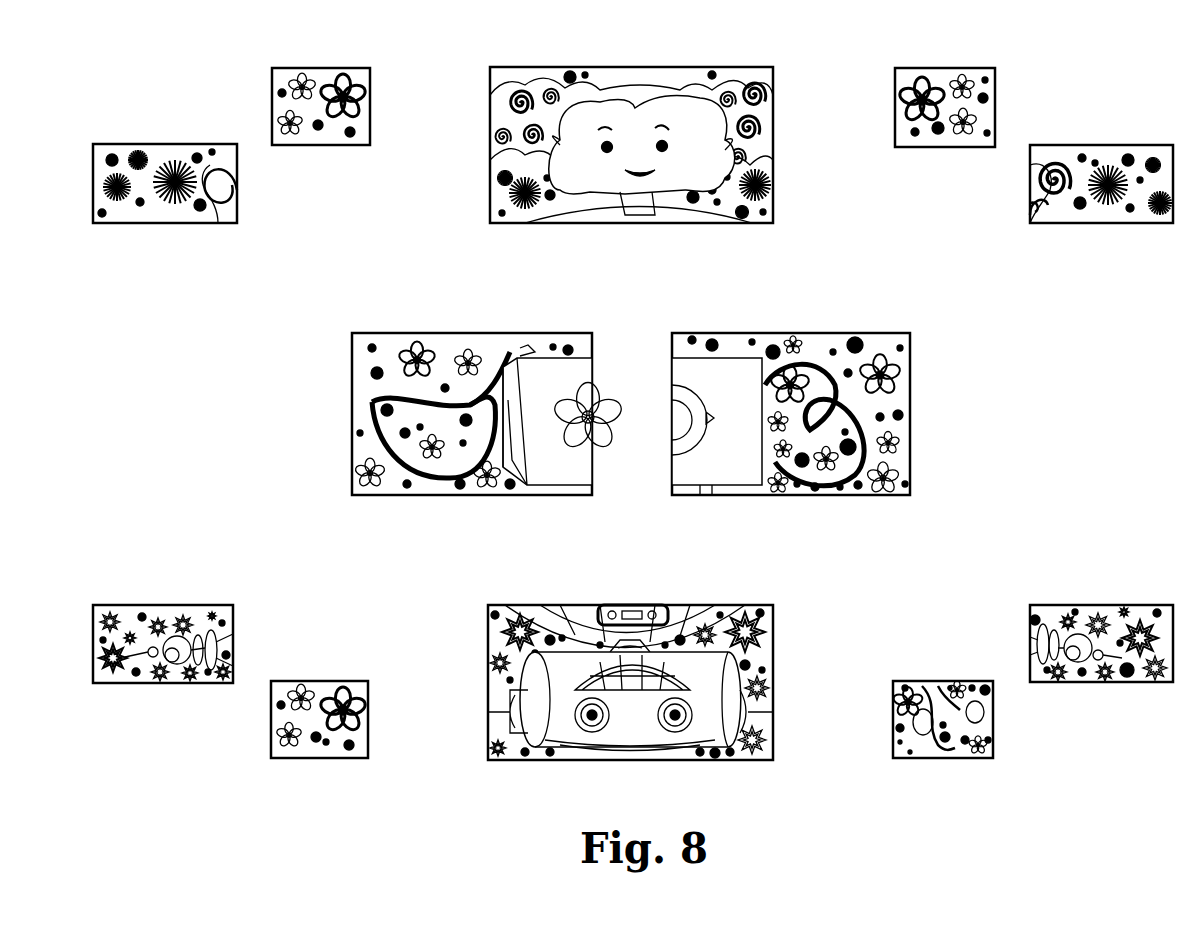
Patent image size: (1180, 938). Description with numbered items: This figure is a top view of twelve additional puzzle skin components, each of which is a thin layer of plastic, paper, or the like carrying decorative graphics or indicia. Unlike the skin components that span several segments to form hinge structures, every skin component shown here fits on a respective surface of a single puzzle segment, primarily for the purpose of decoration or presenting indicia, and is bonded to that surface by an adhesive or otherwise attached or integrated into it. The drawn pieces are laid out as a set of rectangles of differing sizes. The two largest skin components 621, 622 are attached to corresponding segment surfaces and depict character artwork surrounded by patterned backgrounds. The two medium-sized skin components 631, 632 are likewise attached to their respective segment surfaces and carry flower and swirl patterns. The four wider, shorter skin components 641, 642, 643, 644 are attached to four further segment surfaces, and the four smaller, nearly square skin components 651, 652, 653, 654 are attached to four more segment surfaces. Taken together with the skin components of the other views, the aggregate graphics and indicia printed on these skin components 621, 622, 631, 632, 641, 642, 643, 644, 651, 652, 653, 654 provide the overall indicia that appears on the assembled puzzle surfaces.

The skin component 621 is at (665, 215).
The skin component 622 is at (683, 758).
The skin component 631 is at (473, 488).
The skin component 632 is at (788, 488).
The skin component 641 is at (167, 213).
The skin component 642 is at (170, 673).
The skin component 643 is at (1107, 217).
The skin component 644 is at (1092, 675).
The skin component 651 is at (317, 142).
The skin component 652 is at (332, 753).
The skin component 653 is at (952, 143).
The skin component 654 is at (952, 752).